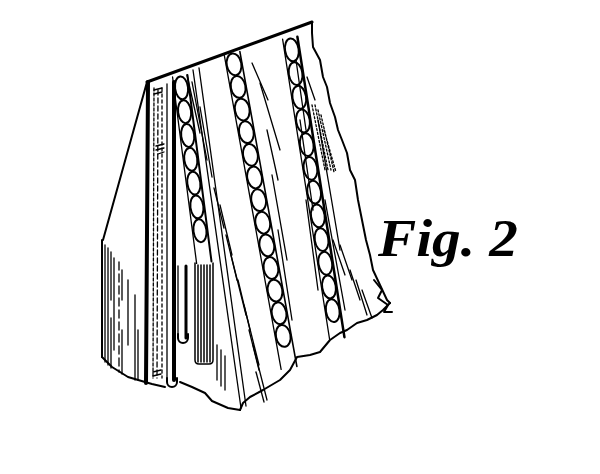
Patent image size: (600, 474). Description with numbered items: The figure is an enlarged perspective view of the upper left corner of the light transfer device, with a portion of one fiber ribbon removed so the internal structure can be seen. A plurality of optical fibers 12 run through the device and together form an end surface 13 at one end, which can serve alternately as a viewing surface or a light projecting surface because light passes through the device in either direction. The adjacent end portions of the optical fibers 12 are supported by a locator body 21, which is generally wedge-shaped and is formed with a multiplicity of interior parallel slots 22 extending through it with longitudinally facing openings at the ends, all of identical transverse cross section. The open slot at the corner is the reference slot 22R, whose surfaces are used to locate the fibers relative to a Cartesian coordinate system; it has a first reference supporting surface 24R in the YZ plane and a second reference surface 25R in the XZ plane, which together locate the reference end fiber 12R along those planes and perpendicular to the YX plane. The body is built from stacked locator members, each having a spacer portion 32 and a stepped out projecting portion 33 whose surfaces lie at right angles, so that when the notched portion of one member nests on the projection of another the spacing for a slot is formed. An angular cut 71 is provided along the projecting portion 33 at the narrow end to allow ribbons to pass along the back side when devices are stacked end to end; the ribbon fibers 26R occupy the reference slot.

The optical fibers 12 is at (229, 52).
The reference end fiber 12R is at (180, 72).
The end surface 13 is at (302, 43).
The locator body 21 is at (98, 311).
The interior parallel slots 22 is at (350, 313).
The reference slot 22R is at (232, 414).
The first reference supporting surface 24R is at (163, 378).
The second reference surface 25R is at (207, 395).
The rod 26R is at (176, 314).
The spacer portion 32 is at (343, 176).
The projecting portion 33 is at (142, 205).
The angular cut 71 is at (127, 150).